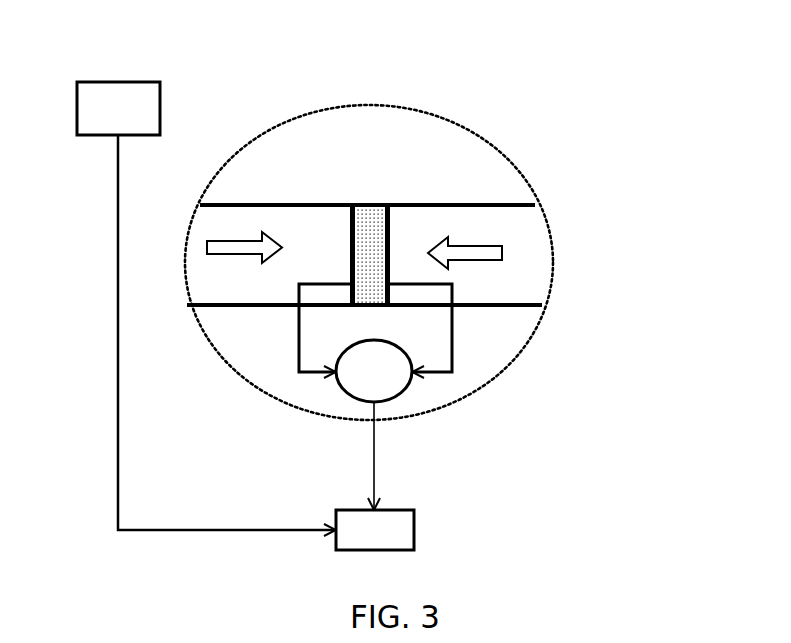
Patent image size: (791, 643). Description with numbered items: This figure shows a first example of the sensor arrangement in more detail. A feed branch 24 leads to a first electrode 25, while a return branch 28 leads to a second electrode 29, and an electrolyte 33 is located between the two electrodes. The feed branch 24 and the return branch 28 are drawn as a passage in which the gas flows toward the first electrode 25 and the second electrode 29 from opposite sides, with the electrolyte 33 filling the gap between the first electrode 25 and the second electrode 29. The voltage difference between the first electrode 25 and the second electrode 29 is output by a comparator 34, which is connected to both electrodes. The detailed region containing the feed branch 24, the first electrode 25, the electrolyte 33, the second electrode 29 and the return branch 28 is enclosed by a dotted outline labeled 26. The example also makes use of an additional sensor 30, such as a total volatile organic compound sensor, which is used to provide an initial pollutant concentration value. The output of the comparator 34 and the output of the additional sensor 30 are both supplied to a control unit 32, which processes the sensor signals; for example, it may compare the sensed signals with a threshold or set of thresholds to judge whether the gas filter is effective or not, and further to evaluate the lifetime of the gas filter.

The feed branch 24 is at (305, 203).
The first electrode 25 is at (350, 243).
The enlarged region 26 is at (523, 350).
The return branch 28 is at (472, 203).
The second electrode 29 is at (390, 235).
The additional sensor 30 is at (102, 82).
The control unit 32 is at (414, 530).
The electrolyte 33 is at (375, 215).
The comparator 34 is at (337, 387).